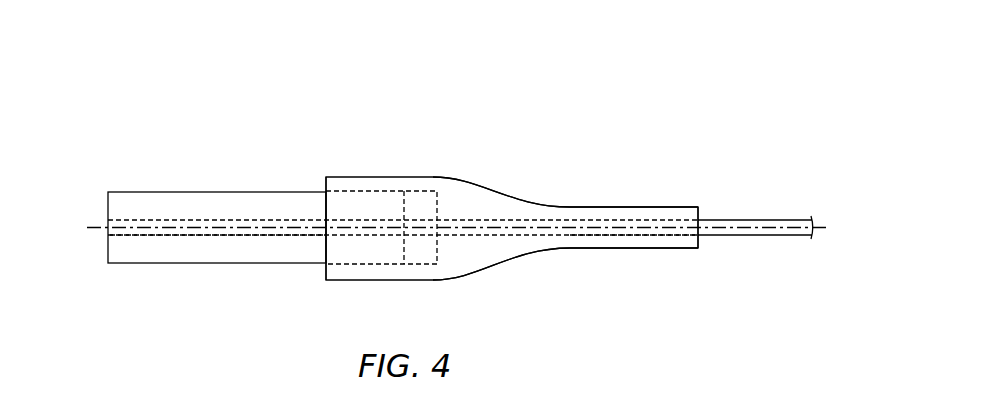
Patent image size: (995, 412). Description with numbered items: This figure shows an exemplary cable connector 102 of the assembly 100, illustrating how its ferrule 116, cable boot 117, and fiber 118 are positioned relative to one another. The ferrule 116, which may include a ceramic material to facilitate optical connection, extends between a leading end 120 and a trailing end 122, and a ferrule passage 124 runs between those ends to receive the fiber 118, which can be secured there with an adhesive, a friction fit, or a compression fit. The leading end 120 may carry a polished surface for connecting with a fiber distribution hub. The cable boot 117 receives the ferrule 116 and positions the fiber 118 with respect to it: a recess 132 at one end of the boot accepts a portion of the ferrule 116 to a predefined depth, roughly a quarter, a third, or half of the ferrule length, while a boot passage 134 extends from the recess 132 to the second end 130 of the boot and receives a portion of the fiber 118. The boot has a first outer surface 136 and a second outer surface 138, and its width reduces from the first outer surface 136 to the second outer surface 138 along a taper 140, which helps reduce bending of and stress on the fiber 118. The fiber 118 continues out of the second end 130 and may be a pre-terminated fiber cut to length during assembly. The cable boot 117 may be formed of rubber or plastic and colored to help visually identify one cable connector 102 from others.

The medical device 100 is at (580, 66).
The cable connector 102 is at (555, 136).
The ferrule 116 is at (190, 190).
The cable boot 117 is at (468, 178).
The fiber 118 is at (793, 237).
The leading end 120 is at (107, 212).
The trailing end 122 is at (325, 195).
The ferrule passage 124 is at (157, 237).
The second end 130 is at (700, 213).
The recess 132 is at (417, 266).
The boot passage 134 is at (622, 236).
The first outer surface 136 is at (372, 176).
The second outer surface 138 is at (627, 206).
The taper 140 is at (513, 197).